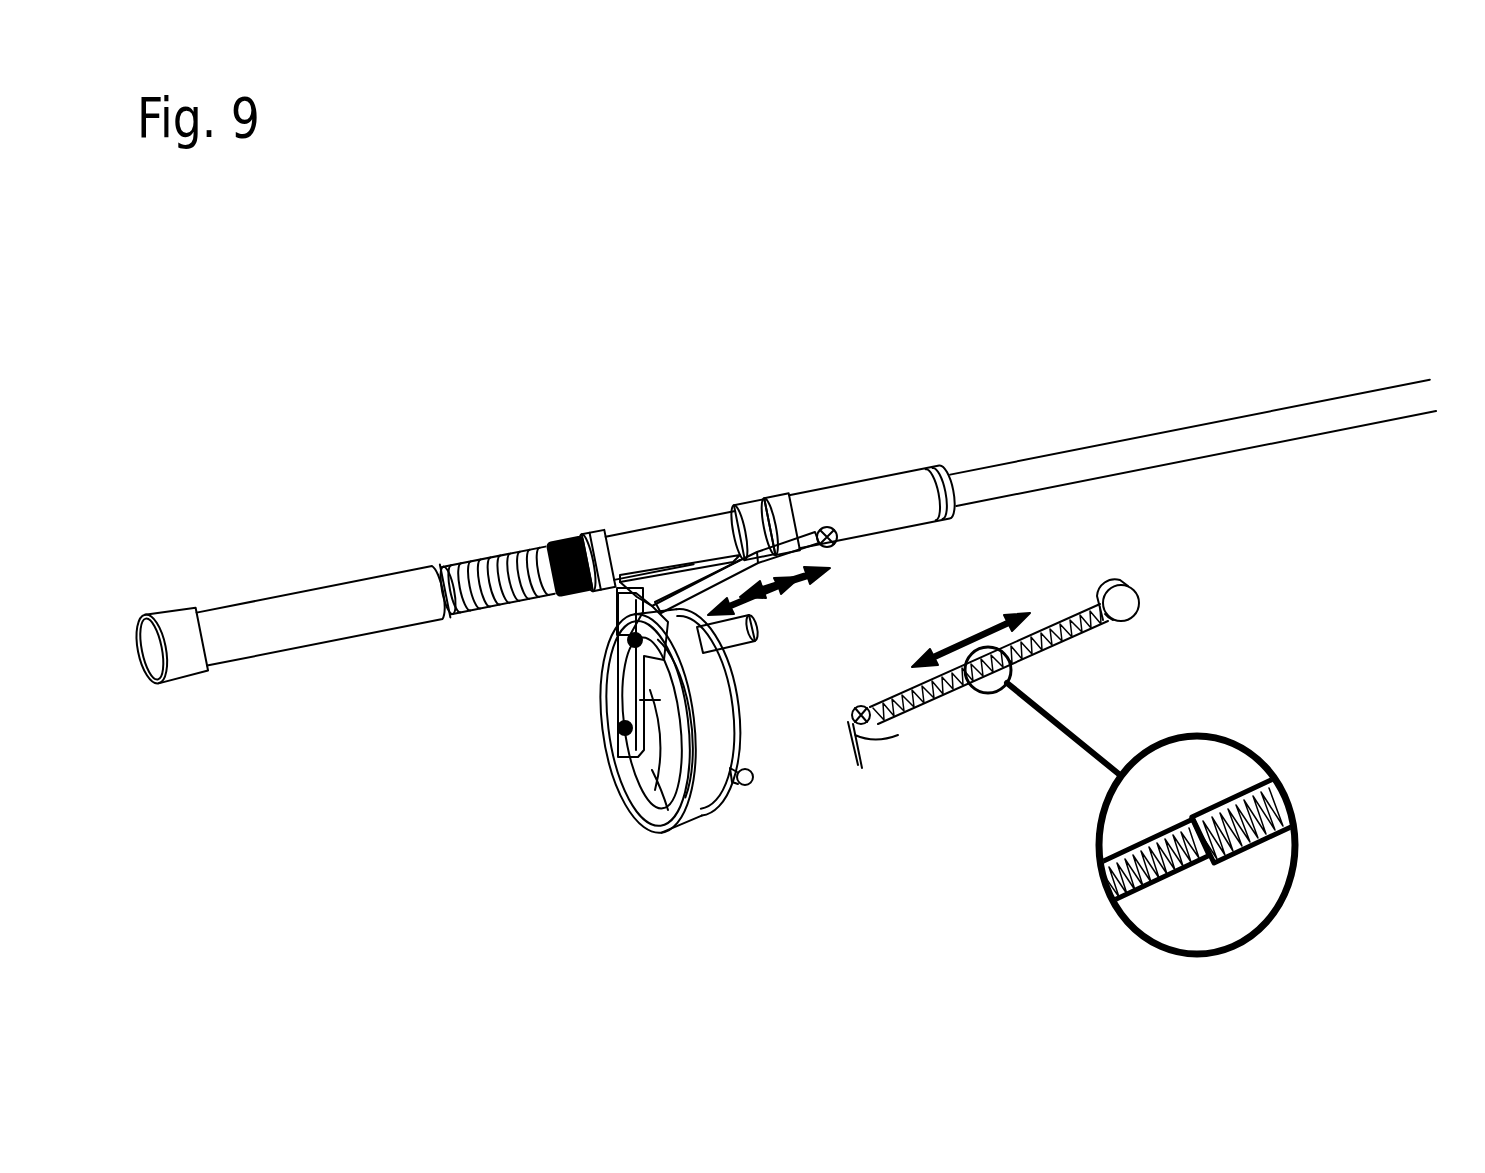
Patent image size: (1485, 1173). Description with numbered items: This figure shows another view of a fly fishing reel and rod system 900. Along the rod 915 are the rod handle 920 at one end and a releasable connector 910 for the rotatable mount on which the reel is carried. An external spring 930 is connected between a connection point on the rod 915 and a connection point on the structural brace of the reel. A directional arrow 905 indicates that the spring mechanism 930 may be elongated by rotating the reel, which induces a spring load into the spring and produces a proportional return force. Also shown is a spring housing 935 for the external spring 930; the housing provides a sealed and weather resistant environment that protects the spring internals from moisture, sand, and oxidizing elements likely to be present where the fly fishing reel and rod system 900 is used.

The fly fishing reel and rod system 900 is at (1302, 136).
The directional arrow 905 is at (786, 606).
The releasable connector 910 is at (606, 522).
The rod 915 is at (1308, 450).
The rod handle 920 is at (262, 588).
The external spring 930 is at (805, 515).
The spring housing 935 is at (1246, 724).